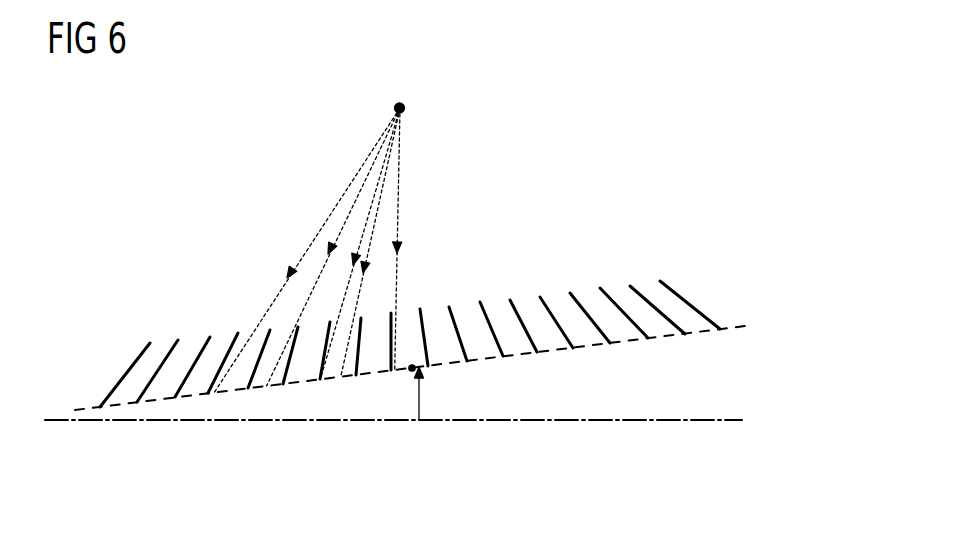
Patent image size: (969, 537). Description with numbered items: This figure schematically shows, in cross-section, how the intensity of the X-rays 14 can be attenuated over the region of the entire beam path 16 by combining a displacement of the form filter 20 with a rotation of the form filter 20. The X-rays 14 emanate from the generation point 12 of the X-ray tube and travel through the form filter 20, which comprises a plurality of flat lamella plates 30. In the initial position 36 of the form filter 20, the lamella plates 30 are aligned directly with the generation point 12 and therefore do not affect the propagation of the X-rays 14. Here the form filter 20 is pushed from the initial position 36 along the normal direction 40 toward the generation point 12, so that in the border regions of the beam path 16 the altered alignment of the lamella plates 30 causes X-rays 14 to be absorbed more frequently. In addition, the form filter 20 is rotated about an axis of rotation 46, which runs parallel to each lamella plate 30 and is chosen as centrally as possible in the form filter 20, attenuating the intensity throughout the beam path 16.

The generation point 12 is at (400, 102).
The X-rays 14 is at (383, 168).
The beam path 16 is at (297, 137).
The form filter 20 is at (428, 311).
The lamella plates 30 is at (682, 298).
The initial position 36 is at (691, 440).
The normal direction 40 is at (419, 397).
The axis of rotation 46 is at (412, 368).